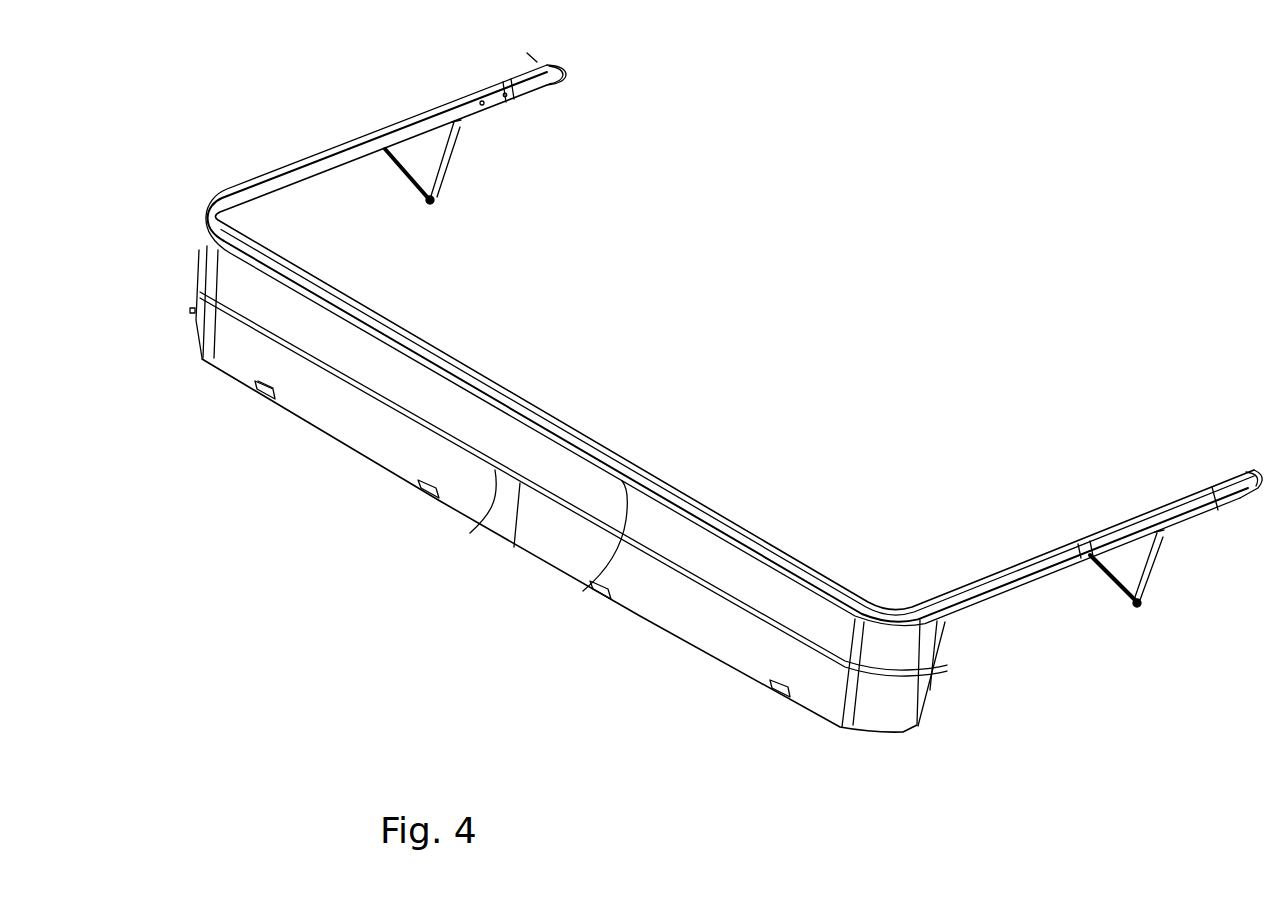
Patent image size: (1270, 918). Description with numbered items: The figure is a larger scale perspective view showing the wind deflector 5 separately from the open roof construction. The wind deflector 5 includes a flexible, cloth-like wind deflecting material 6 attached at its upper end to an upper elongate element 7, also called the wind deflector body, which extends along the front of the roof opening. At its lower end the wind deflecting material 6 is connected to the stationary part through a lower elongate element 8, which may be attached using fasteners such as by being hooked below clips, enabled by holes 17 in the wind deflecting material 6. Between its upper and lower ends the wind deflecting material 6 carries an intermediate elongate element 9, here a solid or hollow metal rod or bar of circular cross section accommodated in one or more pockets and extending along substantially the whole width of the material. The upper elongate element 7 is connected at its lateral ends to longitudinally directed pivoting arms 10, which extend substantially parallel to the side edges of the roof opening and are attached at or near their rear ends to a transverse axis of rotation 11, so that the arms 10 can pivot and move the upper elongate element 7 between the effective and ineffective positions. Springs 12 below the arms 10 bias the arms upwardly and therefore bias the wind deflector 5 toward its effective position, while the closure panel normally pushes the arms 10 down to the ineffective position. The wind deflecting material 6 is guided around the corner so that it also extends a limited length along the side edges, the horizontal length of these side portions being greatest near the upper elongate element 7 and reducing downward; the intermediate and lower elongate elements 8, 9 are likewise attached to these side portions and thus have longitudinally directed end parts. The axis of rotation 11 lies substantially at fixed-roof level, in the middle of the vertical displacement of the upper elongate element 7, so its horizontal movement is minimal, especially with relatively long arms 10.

The wind deflector 5 is at (372, 529).
The flexible wind deflecting material 6 is at (315, 402).
The upper elongate element 7 is at (583, 591).
The lower elongate element 8 is at (258, 398).
The intermediate elongate element 9 is at (470, 533).
The pivoting arms 10 is at (327, 148).
The transverse axis of rotation 11 is at (588, 88).
The springs 12 is at (1147, 588).
The holes 17 is at (597, 606).